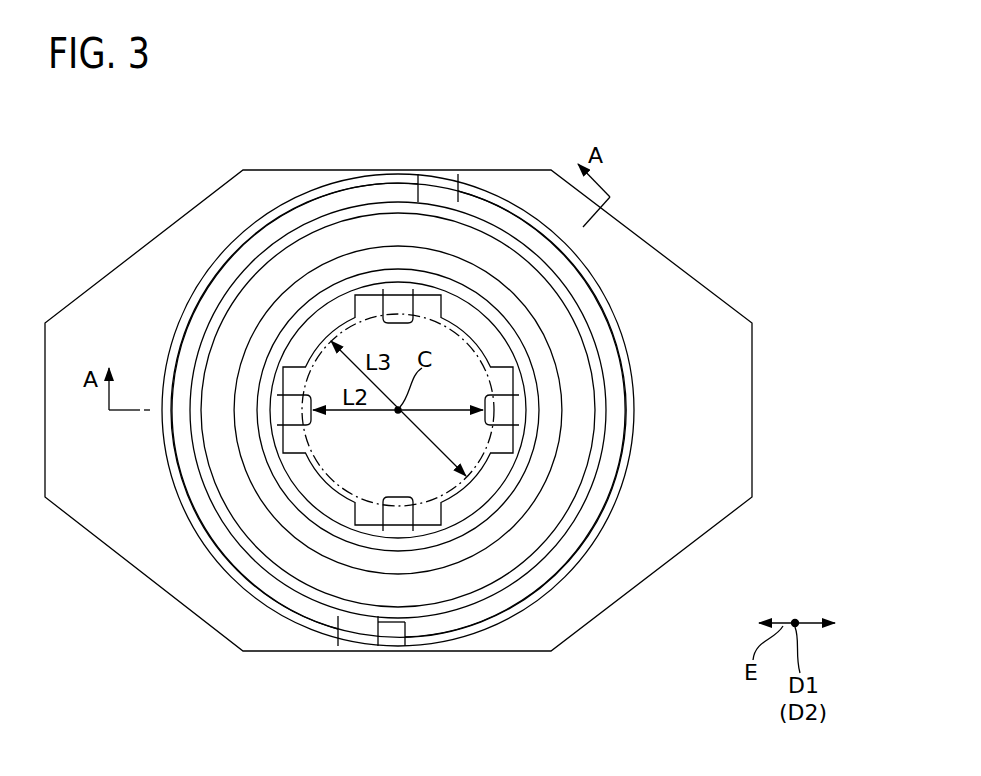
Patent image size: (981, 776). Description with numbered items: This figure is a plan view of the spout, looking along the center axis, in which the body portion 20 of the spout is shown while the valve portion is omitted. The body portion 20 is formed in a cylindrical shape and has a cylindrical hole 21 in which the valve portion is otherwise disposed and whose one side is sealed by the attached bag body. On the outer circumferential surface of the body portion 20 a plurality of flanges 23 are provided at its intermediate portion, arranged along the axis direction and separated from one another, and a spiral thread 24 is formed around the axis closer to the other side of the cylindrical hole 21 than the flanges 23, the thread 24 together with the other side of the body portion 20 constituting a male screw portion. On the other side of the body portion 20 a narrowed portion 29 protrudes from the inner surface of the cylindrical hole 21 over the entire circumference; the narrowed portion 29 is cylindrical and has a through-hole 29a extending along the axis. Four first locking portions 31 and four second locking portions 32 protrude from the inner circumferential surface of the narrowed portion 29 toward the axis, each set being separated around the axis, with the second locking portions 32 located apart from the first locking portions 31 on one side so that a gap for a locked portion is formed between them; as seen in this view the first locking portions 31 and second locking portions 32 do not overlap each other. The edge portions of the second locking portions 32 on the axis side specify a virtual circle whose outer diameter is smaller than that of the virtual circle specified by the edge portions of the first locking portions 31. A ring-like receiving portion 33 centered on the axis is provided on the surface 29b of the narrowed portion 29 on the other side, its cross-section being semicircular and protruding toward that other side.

The body portion 20 is at (222, 293).
The cylindrical hole 21 is at (444, 556).
The flanges 23 is at (735, 408).
The thread 24 is at (593, 307).
The narrowed portion 29 is at (252, 452).
The through-hole 29a is at (394, 531).
The surface 29b is at (262, 478).
The first locking portion 31 is at (318, 330).
The second locking portion 32 is at (312, 414).
The receiving portion 33 is at (297, 498).